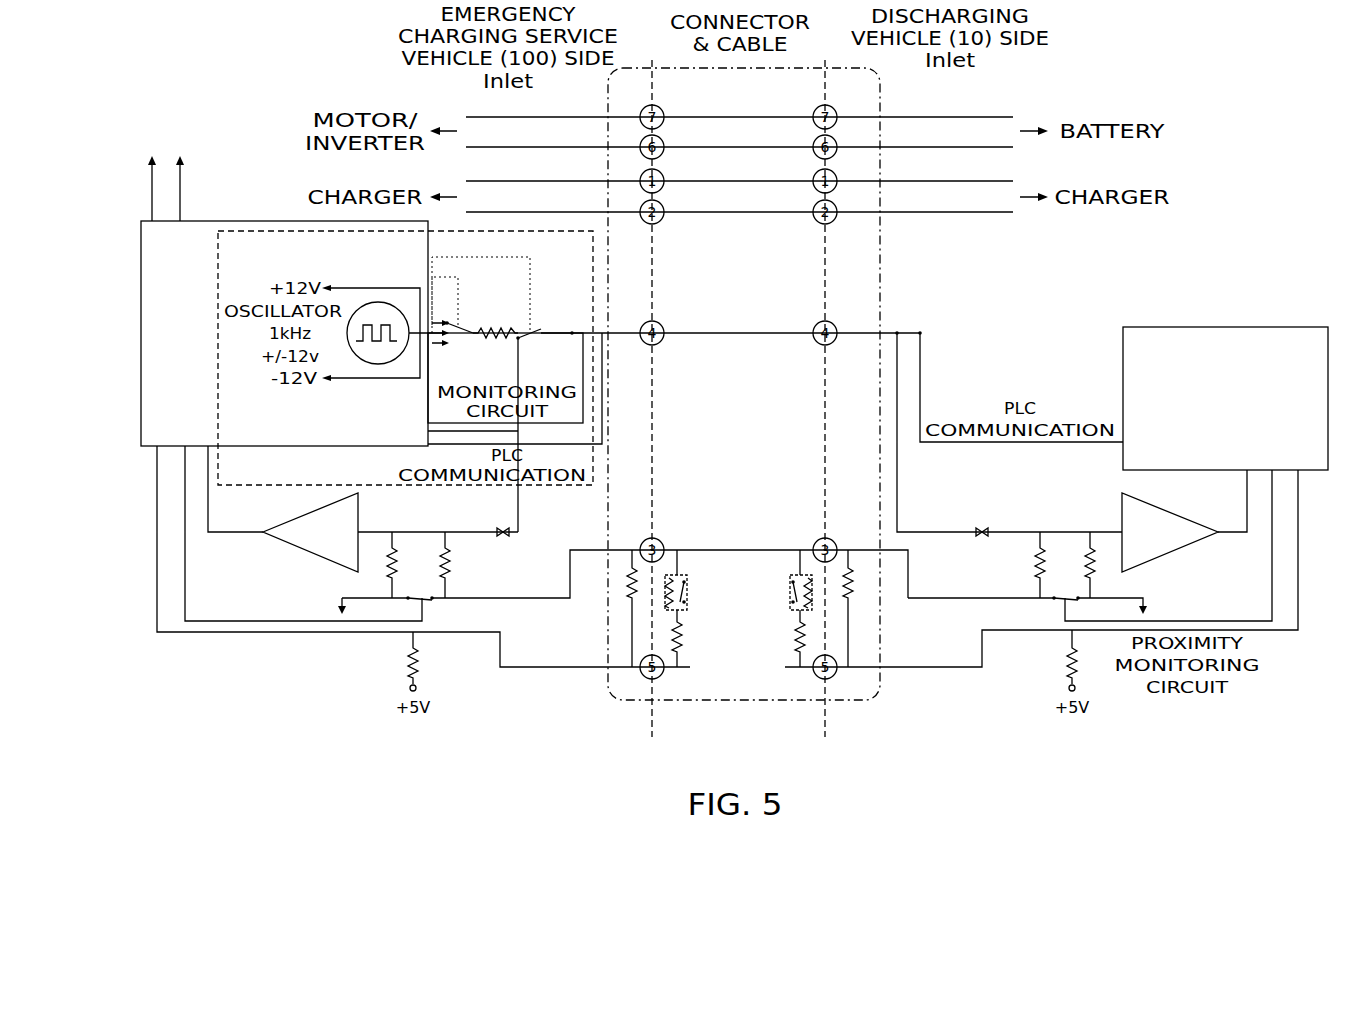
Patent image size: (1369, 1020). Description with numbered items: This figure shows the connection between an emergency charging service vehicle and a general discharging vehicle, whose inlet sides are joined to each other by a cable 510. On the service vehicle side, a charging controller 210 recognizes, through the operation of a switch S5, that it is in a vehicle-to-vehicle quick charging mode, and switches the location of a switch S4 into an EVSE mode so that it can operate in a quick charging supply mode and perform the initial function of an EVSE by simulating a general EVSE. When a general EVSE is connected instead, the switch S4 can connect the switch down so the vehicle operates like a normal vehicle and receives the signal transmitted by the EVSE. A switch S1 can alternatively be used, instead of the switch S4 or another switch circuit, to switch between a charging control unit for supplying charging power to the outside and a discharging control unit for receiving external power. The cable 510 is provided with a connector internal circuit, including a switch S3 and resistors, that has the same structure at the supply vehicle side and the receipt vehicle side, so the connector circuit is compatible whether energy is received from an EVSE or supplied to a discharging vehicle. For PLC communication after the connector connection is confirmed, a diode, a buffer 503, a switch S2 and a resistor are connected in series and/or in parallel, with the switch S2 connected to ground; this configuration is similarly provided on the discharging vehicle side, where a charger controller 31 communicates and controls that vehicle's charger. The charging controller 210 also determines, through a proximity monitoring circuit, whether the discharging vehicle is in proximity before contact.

The charging controller 210 is at (226, 221).
The buffer 503 is at (360, 512).
The charger controller 31 is at (1257, 326).
The cable 510 is at (882, 690).
The switch S1 is at (1120, 515).
The switch S2 is at (742, 573).
The switch S3 is at (688, 589).
The switch S4 is at (535, 430).
The switch S5 is at (155, 153).